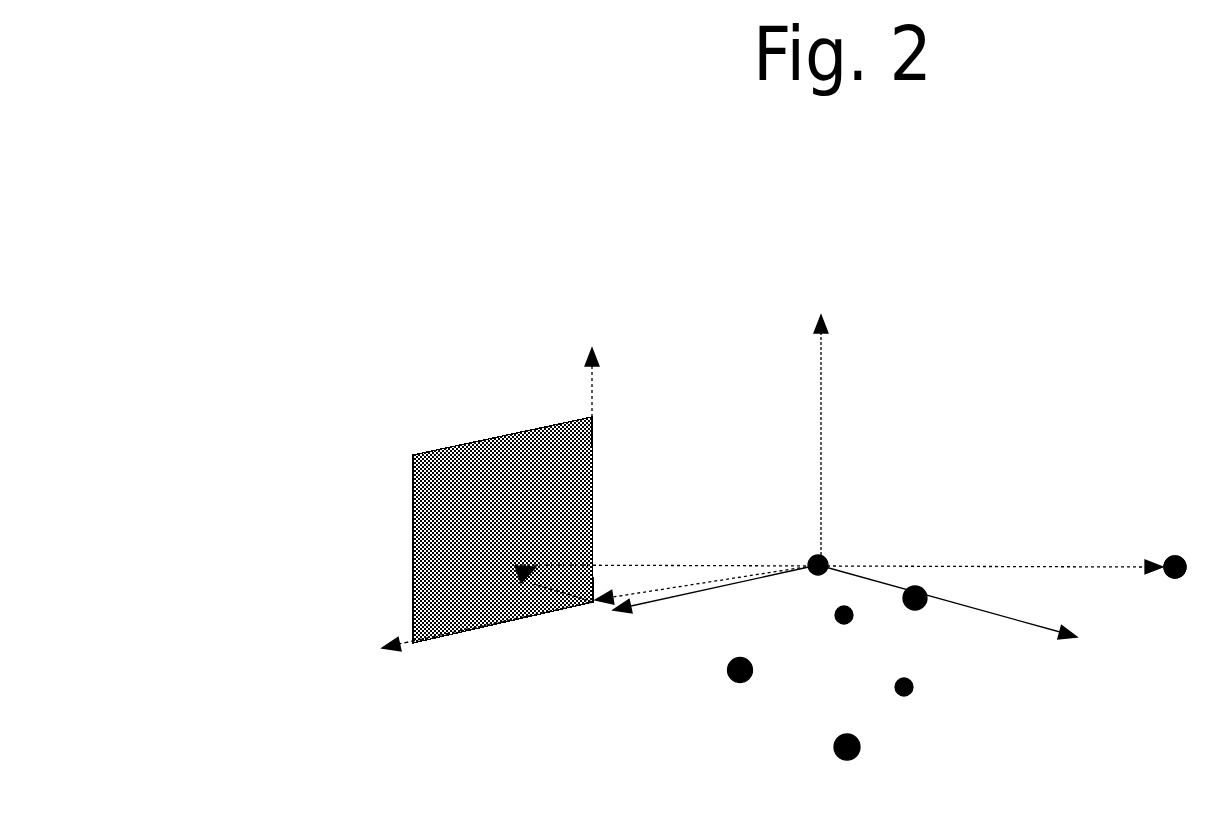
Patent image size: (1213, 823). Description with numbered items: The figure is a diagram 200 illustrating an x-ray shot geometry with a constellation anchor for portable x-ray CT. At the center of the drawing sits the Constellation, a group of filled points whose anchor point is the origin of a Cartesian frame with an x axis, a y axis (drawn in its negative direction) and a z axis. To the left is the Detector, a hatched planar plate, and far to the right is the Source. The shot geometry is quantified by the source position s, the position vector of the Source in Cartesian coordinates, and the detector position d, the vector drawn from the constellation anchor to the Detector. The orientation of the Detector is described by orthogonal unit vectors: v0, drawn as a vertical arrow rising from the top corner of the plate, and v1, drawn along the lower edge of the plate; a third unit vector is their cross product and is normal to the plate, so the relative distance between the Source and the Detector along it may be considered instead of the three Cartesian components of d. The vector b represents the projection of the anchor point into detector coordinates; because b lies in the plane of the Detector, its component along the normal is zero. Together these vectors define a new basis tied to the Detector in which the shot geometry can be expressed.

The diagram 200 is at (237, 100).
The detector Detector is at (503, 530).
The constellation anchor Constellation is at (826, 611).
The source Source is at (1155, 527).
The detector orientation unit vector v0 is at (633, 376).
The detector orientation unit vector v1 is at (392, 598).
The projection of the anchor point in detector coordinates b is at (549, 594).
The detector position d is at (633, 572).
The source position s is at (1166, 590).
The x axis x is at (947, 614).
The y axis y is at (628, 630).
The z axis z is at (832, 440).